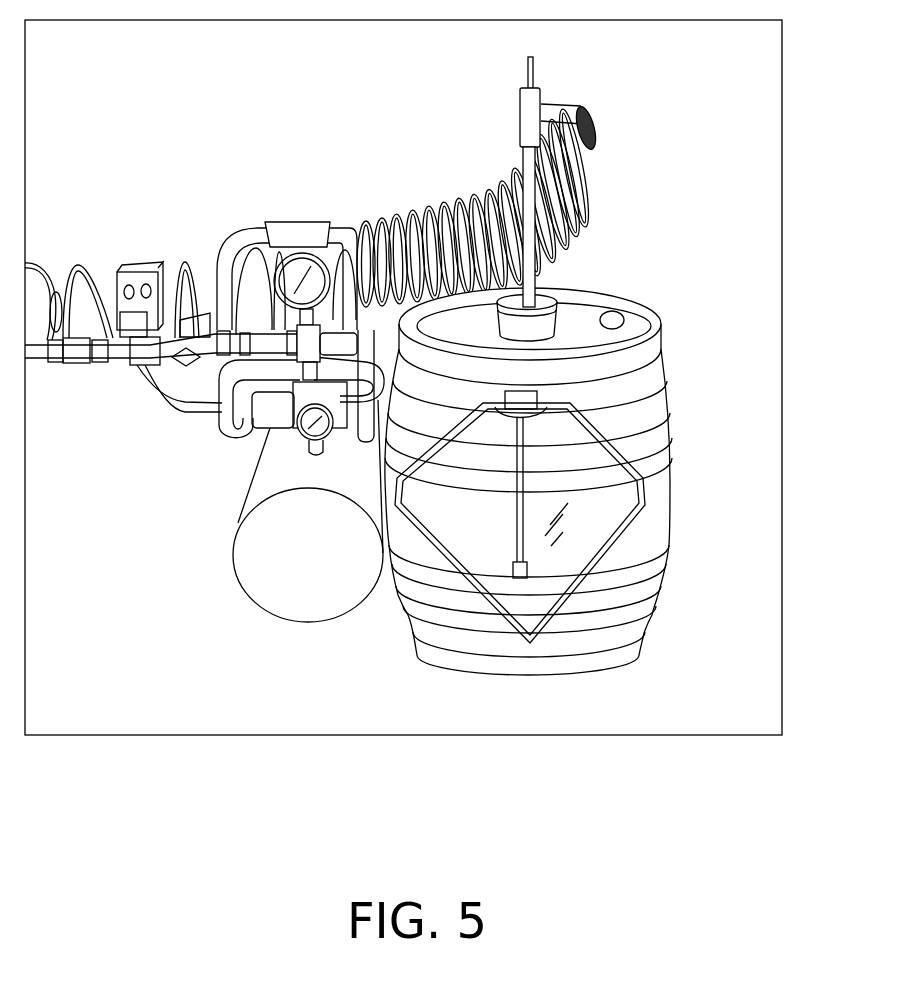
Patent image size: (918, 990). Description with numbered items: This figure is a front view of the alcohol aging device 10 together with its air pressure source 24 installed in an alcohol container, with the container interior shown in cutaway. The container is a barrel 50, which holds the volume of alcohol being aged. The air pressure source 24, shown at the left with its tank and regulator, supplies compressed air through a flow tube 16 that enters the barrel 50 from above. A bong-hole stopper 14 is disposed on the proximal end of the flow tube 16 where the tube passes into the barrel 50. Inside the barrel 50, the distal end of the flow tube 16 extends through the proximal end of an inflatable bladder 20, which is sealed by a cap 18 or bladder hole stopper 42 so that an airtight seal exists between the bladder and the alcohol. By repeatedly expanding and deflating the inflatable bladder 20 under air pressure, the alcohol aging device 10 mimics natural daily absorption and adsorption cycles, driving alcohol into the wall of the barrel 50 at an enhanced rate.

The alcohol aging device 10 is at (629, 464).
The bong-hole stopper 14 is at (536, 308).
The flow tube 16 is at (528, 207).
The cap 18 is at (521, 399).
The bladder hole stopper 42 is at (684, 473).
The inflatable bladder 20 is at (593, 540).
The air pressure source 24 is at (205, 447).
The barrel 50 is at (648, 448).